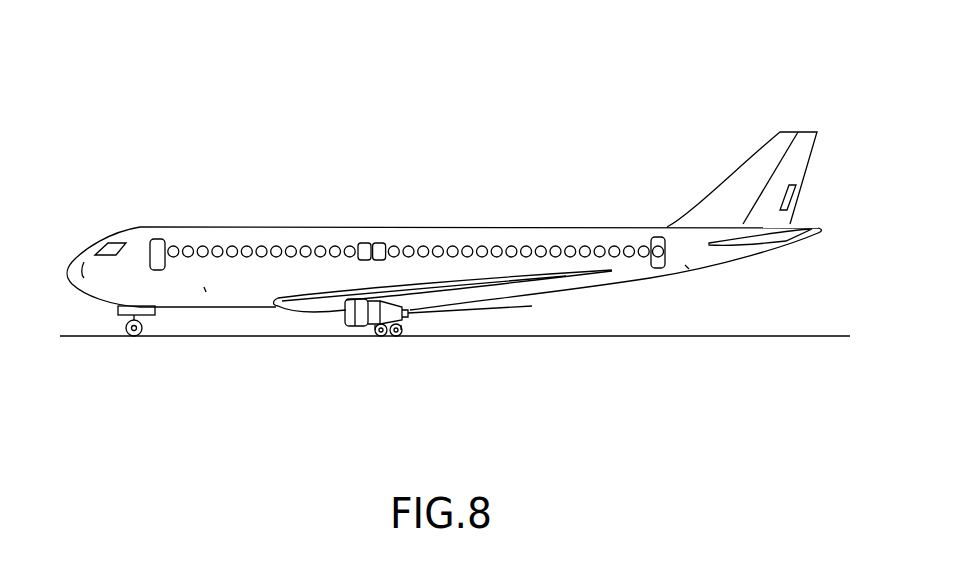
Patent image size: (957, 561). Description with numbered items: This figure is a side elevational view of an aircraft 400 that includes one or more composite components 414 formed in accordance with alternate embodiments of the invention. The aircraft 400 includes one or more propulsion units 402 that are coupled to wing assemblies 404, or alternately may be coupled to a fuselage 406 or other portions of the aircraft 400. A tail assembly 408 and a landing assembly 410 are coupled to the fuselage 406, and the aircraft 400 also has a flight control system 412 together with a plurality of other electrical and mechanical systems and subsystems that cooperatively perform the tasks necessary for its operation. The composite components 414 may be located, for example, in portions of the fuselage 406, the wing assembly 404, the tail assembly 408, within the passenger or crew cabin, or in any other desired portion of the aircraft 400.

The aircraft 400 is at (620, 68).
The propulsion unit 402 is at (352, 323).
The wing assembly 404 is at (462, 288).
The fuselage 406 is at (418, 225).
The tail assembly 408 is at (840, 193).
The landing assembly 410 is at (133, 336).
The flight control system 412 is at (88, 258).
The composite component 414 is at (300, 291).